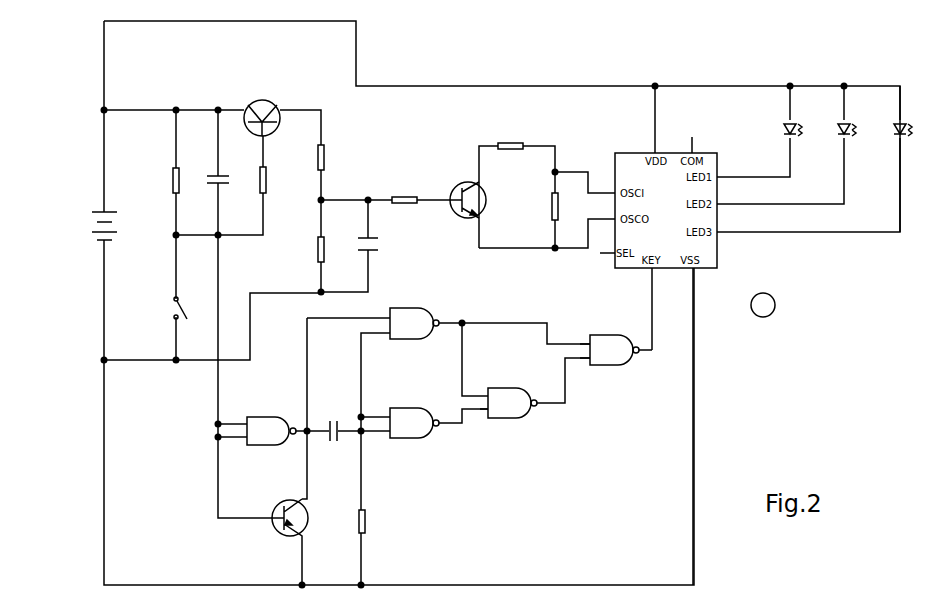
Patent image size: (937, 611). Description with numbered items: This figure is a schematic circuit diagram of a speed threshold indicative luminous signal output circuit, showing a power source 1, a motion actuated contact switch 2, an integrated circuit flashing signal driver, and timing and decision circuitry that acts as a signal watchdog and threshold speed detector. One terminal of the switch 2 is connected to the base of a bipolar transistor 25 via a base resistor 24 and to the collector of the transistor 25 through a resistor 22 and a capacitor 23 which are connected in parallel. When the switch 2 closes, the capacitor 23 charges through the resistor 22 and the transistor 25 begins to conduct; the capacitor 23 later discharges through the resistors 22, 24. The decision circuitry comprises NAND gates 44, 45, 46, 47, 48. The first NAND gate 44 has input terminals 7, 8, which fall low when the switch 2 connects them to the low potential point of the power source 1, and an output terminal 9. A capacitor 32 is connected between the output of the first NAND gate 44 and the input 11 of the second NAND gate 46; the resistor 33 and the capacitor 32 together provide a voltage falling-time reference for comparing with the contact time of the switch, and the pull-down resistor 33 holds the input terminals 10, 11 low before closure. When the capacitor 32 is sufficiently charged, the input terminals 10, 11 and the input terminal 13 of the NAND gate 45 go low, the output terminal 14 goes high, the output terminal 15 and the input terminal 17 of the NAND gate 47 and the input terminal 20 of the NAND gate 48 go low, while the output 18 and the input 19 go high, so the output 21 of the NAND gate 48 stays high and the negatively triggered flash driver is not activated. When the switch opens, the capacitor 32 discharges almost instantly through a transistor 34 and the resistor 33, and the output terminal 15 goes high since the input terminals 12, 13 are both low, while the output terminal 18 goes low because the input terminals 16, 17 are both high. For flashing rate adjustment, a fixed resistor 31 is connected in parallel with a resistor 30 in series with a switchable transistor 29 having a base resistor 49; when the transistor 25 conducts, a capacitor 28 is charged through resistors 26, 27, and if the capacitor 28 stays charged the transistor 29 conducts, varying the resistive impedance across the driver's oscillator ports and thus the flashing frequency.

The power source 1 is at (98, 222).
The switch 2 is at (174, 307).
The input terminal 7 is at (232, 415).
The input terminal 8 is at (232, 447).
The output terminal 9 is at (300, 441).
The input terminal 10 is at (375, 409).
The input terminal 11 is at (375, 443).
The input terminal 12 is at (348, 366).
The input terminal 13 is at (375, 459).
The output terminal 14 is at (461, 427).
The output terminal 15 is at (512, 335).
The input terminal 16 is at (477, 416).
The input terminal 17 is at (475, 359).
The output terminal 18 is at (562, 391).
The input terminal 19 is at (579, 366).
The input terminal 20 is at (579, 336).
The output terminal 21 is at (646, 362).
The resistor 22 is at (175, 170).
The capacitor 23 is at (216, 178).
The base resistor 24 is at (260, 182).
The bipolar transistor 25 is at (262, 107).
The resistor 26 is at (325, 153).
The resistor 27 is at (318, 250).
The capacitor 28 is at (386, 247).
The switchable transistor 29 is at (463, 183).
The resistor 30 is at (512, 143).
The fixed resistor 31 is at (552, 210).
The capacitor 32 is at (334, 417).
The resistor 33 is at (365, 522).
The transistor 34 is at (276, 534).
The first NAND gate 44 is at (271, 431).
The NAND gate 45 is at (414, 323).
The second NAND gate 46 is at (414, 423).
The NAND gate 47 is at (512, 403).
The NAND gate 48 is at (614, 350).
The base resistor 49 is at (403, 197).